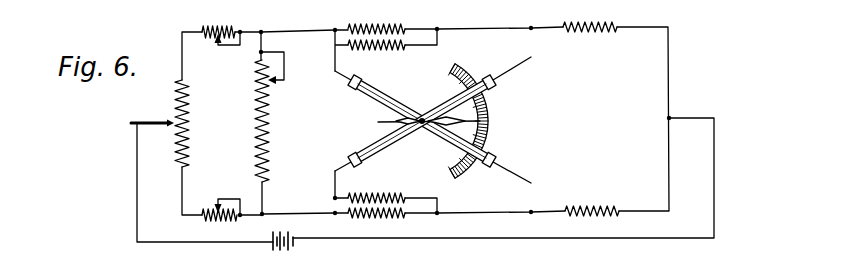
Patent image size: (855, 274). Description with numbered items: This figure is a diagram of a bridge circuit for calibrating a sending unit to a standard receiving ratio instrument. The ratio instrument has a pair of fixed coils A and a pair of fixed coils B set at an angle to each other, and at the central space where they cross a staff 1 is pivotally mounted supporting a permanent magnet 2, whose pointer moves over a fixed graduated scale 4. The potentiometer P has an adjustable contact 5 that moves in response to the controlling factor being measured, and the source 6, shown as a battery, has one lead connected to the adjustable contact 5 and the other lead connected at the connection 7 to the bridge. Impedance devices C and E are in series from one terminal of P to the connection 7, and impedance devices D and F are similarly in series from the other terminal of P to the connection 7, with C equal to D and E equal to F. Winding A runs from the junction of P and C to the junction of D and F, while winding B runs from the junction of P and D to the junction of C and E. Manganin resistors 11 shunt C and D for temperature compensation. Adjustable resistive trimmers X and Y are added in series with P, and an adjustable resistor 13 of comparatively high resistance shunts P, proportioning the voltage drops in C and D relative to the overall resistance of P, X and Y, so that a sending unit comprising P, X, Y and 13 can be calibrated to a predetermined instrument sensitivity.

The staff 1 is at (423, 117).
The permanent magnet 2 is at (388, 122).
The fixed graduated scale 4 is at (488, 107).
The adjustable contact 5 is at (163, 121).
The source 6 is at (287, 249).
The connection 7 is at (659, 121).
The manganin resistors 11 is at (391, 51).
The adjustable resistor 13 is at (271, 113).
The fixed coils A is at (362, 97).
The fixed coils B is at (363, 144).
The impedance device C is at (370, 19).
The impedance device D is at (370, 223).
The impedance device E is at (590, 17).
The impedance device F is at (592, 201).
The potentiometer P is at (169, 123).
The adjustable resistive trimmer X is at (221, 26).
The adjustable resistive trimmer Y is at (221, 220).